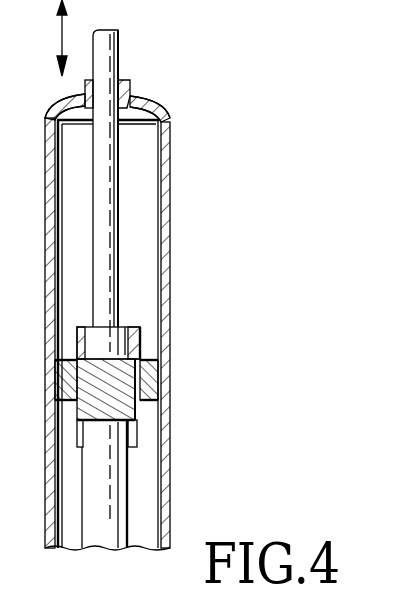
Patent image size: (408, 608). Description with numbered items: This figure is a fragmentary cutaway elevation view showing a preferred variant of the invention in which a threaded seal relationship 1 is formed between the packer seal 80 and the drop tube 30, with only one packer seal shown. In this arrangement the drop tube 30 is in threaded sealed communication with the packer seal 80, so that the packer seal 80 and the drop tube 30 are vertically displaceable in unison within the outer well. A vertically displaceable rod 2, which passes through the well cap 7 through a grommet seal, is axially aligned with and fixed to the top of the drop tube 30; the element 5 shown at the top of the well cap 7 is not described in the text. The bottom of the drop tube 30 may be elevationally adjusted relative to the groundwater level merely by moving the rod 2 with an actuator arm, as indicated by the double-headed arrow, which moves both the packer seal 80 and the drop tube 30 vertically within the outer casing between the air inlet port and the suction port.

The threaded seal relationship 1 is at (146, 358).
The vertically displaceable rod 2 is at (122, 186).
The collar bushing 5 is at (123, 86).
The well cap 7 is at (152, 107).
The drop tube 30 is at (128, 517).
The packer seal 80 is at (148, 386).